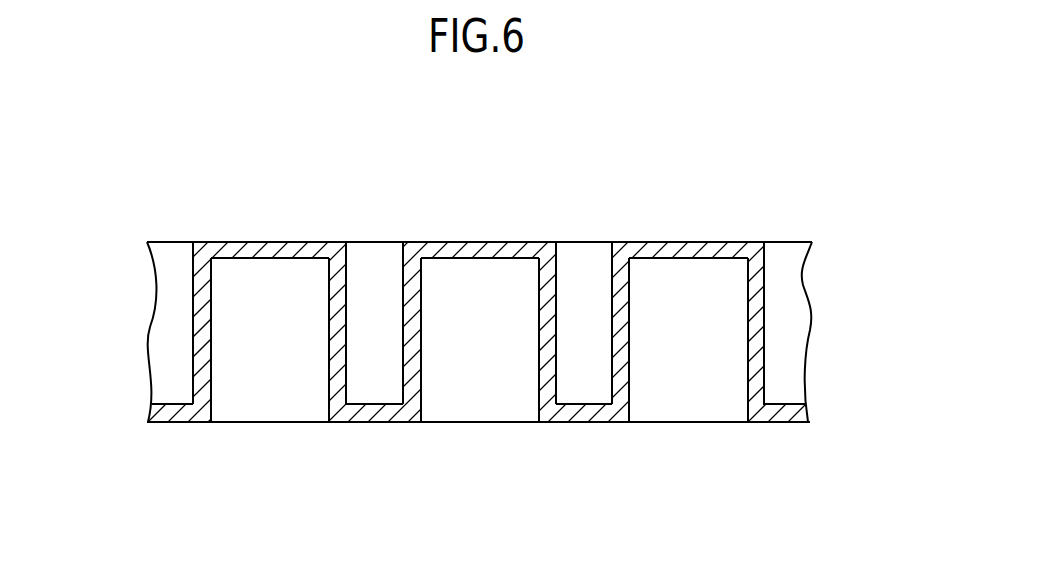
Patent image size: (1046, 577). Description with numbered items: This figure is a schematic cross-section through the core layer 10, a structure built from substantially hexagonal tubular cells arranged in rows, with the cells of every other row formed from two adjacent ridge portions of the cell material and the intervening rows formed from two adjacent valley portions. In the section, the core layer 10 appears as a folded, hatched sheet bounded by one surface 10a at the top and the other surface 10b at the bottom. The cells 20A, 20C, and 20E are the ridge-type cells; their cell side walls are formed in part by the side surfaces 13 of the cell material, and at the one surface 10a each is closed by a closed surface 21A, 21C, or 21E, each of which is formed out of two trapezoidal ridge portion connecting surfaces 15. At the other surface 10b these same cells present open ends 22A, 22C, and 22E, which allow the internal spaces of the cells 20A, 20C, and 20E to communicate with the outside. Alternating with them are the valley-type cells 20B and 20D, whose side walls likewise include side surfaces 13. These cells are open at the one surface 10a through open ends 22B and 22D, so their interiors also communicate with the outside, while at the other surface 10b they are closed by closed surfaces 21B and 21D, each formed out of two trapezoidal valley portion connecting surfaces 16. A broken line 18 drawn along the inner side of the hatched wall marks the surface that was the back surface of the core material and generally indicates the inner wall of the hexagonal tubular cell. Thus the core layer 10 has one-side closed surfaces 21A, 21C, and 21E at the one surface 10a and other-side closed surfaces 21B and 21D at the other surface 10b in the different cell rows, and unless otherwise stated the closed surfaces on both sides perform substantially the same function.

The core layer 10 is at (798, 192).
The one surface 10a is at (790, 241).
The other surface 10b is at (778, 423).
The side surface 13 is at (765, 326).
The ridge portion connecting surface 15 is at (220, 238).
The valley portion connecting surface 16 is at (173, 422).
The broken line 18 is at (747, 293).
The cell 20A is at (250, 333).
The cell 20B is at (373, 271).
The cell 20C is at (483, 279).
The cell 20D is at (587, 274).
The cell 20E is at (695, 276).
The closed surface 21A is at (267, 241).
The closed surface 21B is at (370, 423).
The closed surface 21C is at (480, 241).
The closed surface 21D is at (582, 423).
The closed surface 21E is at (688, 241).
The open end 22A is at (272, 423).
The open end 22B is at (378, 241).
The open end 22C is at (477, 423).
The open end 22D is at (585, 241).
The open end 22E is at (693, 423).